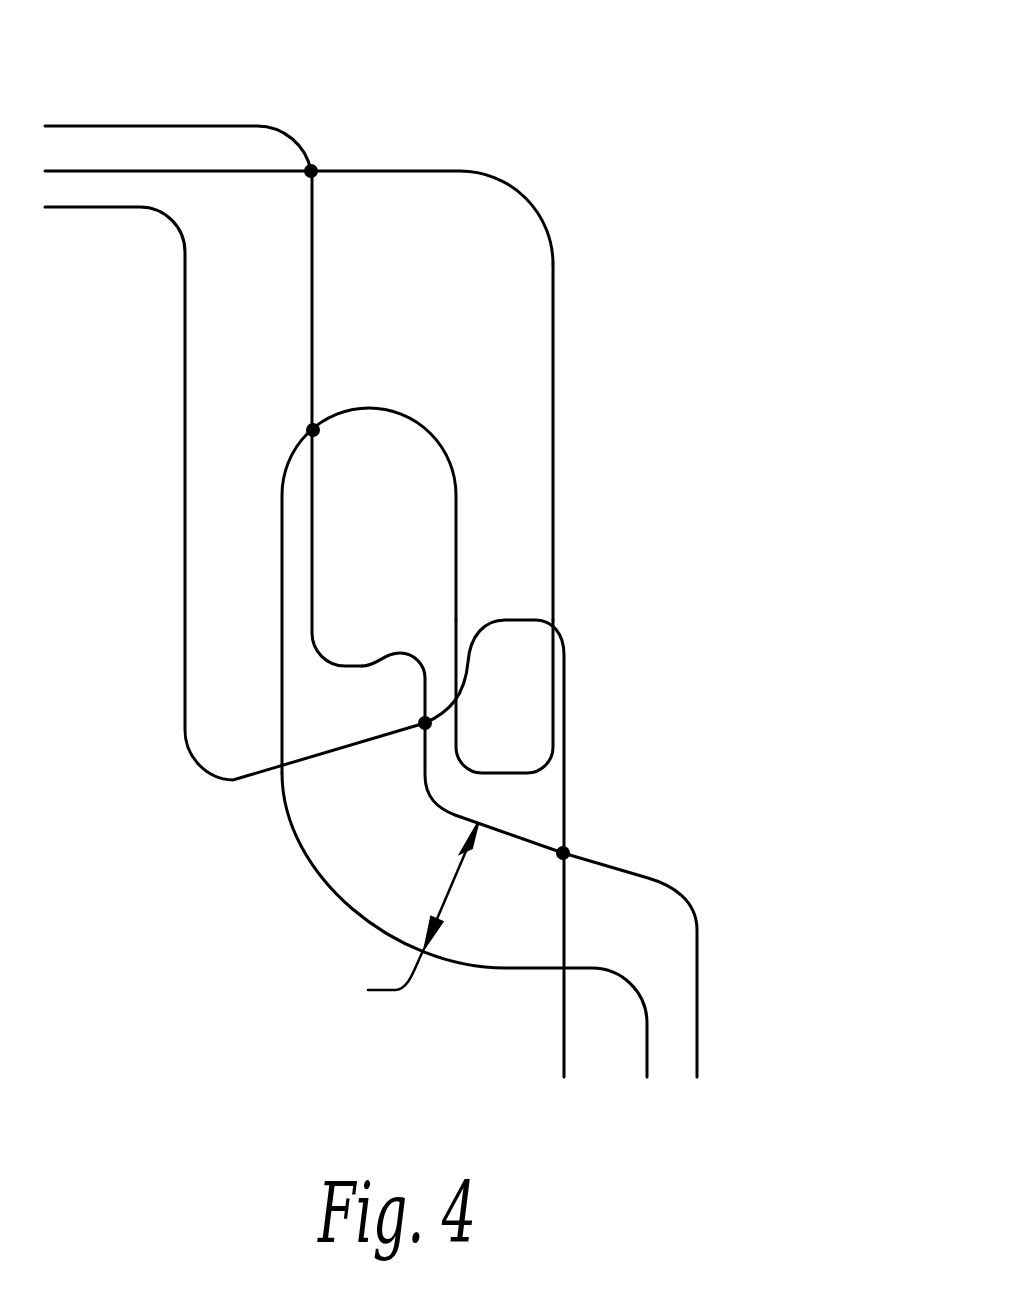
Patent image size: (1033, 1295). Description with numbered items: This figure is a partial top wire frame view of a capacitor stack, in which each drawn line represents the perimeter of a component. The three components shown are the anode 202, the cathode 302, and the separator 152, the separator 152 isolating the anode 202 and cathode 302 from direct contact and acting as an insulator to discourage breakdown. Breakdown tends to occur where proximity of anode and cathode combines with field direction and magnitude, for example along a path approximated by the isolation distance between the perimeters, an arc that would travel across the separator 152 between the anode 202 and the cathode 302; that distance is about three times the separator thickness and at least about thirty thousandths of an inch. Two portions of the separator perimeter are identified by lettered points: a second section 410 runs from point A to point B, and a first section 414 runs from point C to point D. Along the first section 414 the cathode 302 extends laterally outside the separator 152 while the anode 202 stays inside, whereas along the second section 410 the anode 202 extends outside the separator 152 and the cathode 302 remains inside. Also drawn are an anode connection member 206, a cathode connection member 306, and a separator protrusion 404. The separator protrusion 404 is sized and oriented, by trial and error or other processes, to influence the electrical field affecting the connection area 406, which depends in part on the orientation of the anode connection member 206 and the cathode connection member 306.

The connection area 406 is at (711, 42).
The anode 202 is at (508, 208).
The anode connection member 206 is at (541, 490).
The cathode connection member 306 is at (525, 650).
The second section 410 is at (313, 333).
The separator protrusion 404 is at (360, 667).
The first section 414 is at (430, 793).
The cathode 302 is at (556, 780).
The separator 152 is at (698, 950).